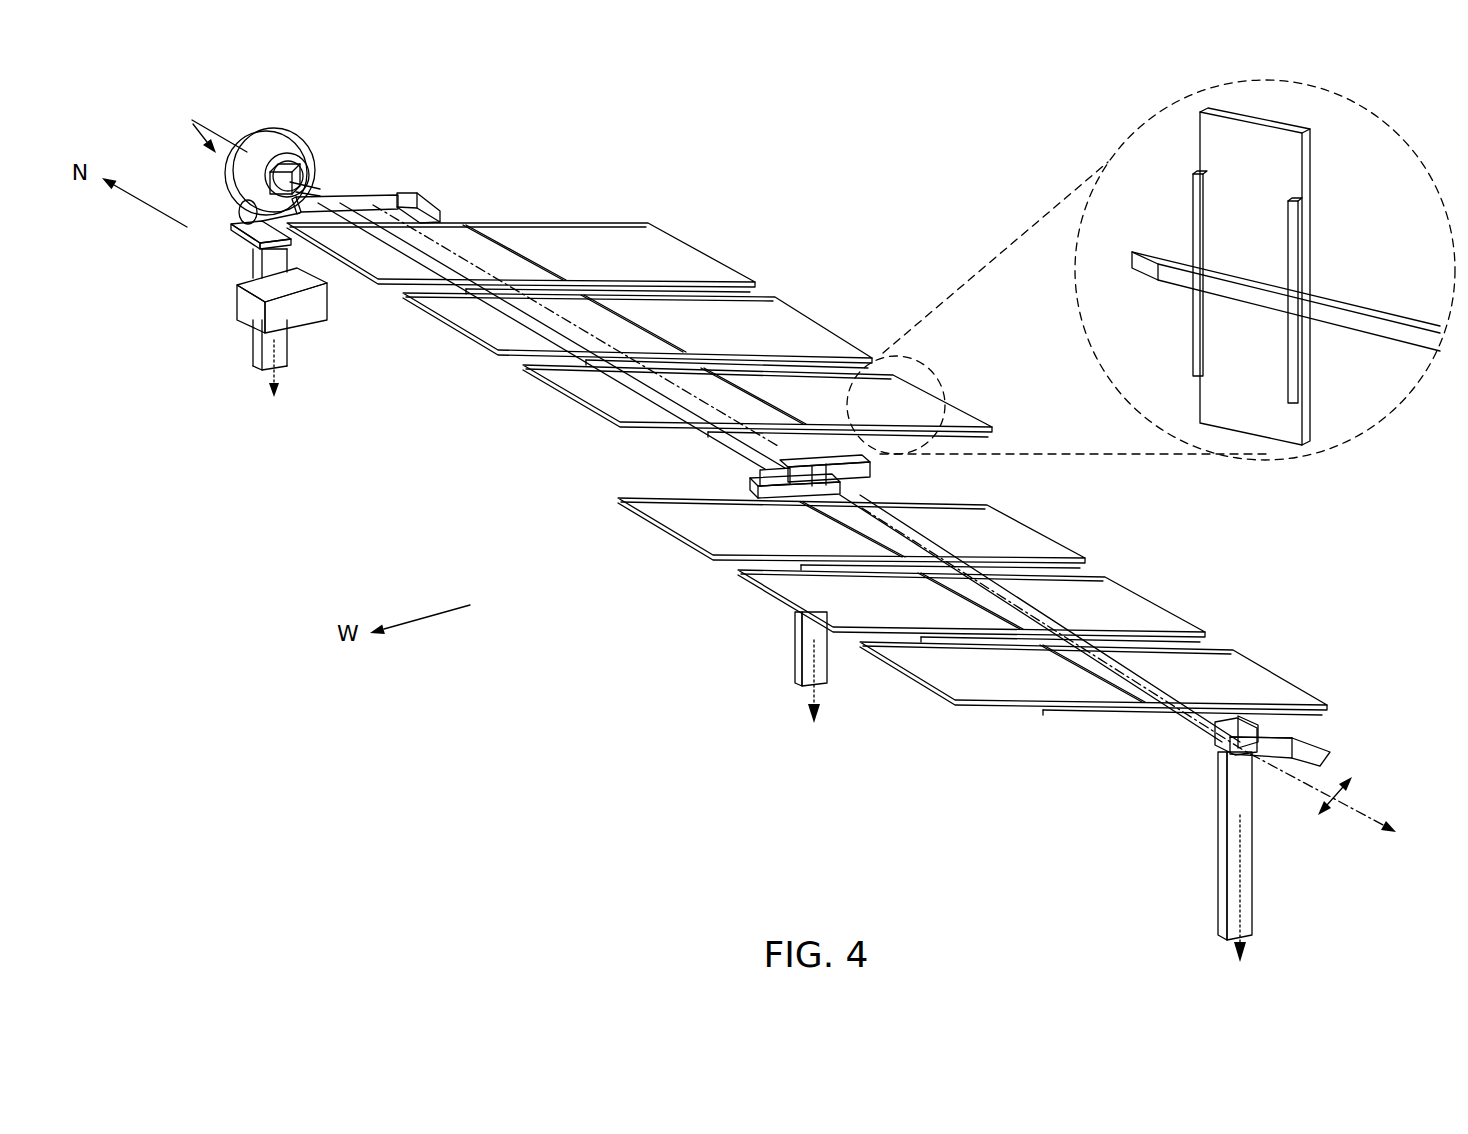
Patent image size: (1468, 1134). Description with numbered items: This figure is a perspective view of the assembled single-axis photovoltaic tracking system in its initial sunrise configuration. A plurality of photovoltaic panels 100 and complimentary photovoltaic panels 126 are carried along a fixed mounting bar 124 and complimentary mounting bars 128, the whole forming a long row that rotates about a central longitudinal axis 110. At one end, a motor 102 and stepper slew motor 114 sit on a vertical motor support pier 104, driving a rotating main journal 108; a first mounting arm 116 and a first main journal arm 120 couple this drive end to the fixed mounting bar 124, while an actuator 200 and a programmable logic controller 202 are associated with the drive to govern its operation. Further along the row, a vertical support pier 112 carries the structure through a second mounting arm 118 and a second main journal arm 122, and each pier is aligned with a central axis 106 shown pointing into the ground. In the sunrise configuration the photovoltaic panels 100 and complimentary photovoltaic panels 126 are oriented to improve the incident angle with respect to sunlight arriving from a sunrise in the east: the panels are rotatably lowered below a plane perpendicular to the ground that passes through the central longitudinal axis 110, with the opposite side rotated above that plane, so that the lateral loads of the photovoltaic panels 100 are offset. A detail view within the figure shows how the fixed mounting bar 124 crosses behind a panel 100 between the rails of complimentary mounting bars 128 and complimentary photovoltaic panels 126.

The photovoltaic panels 100 is at (700, 254).
The motor 102 is at (310, 180).
The vertical motor support pier 104 is at (250, 256).
The central axis 106 is at (280, 355).
The rotating main journal 108 is at (244, 196).
The central longitudinal axis 110 is at (1358, 806).
The vertical support pier 112 is at (793, 665).
The stepper slew motor 114 is at (297, 152).
The first mounting arm 116 is at (362, 193).
The second mounting arm 118 is at (316, 226).
The first main journal arm 120 is at (415, 192).
The second main journal arm 122 is at (750, 476).
The fixed mounting bar 124 is at (712, 338).
The complimentary photovoltaic panels 126 is at (455, 238).
The complimentary mounting bars 128 is at (1192, 214).
The actuator 200 is at (191, 124).
The programmable logic controller 202 is at (240, 318).